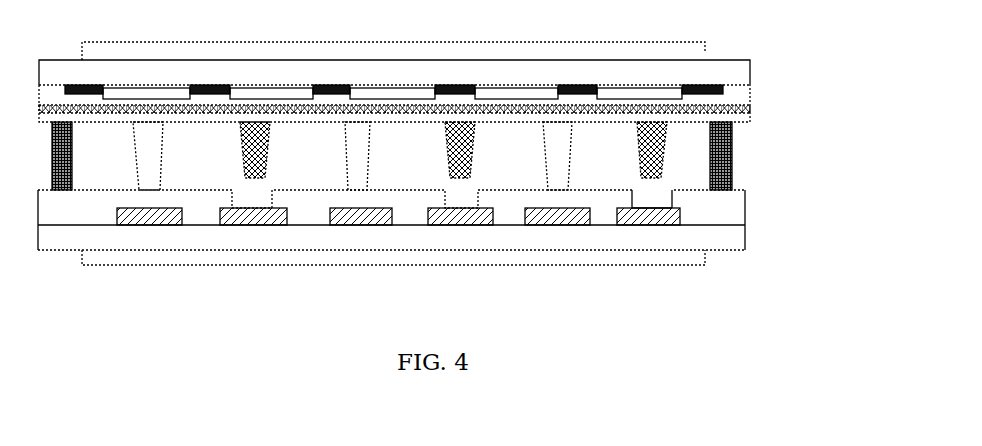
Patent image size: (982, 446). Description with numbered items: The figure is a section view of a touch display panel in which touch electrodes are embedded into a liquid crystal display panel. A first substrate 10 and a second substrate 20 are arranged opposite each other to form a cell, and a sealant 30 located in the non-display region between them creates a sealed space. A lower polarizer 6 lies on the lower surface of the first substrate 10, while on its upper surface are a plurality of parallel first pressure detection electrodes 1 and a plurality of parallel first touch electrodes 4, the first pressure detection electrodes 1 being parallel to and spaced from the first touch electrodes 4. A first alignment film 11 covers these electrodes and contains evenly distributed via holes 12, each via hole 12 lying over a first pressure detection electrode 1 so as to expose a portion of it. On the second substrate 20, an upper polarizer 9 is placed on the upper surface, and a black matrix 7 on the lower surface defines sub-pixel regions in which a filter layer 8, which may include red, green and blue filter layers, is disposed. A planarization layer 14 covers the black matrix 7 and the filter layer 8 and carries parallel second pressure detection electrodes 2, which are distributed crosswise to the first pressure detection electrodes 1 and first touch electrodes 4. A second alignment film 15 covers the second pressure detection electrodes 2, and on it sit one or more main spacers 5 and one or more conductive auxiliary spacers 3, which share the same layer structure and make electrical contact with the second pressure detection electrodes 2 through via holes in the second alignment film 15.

The first pressure detection electrode 1 is at (245, 210).
The second pressure detection electrode 2 is at (727, 108).
The conductive auxiliary spacer 3 is at (642, 144).
The first touch electrode 4 is at (163, 212).
The main spacer 5 is at (560, 150).
The lower polarizer 6 is at (688, 257).
The black matrix 7 is at (333, 85).
The filter layer 8 is at (395, 93).
The upper polarizer 9 is at (690, 52).
The first substrate 10 is at (715, 237).
The first alignment film 11 is at (725, 210).
The via hole 12 is at (650, 189).
The planarization layer 14 is at (740, 97).
The second alignment film 15 is at (750, 118).
The second substrate 20 is at (723, 72).
The sealant 30 is at (725, 173).